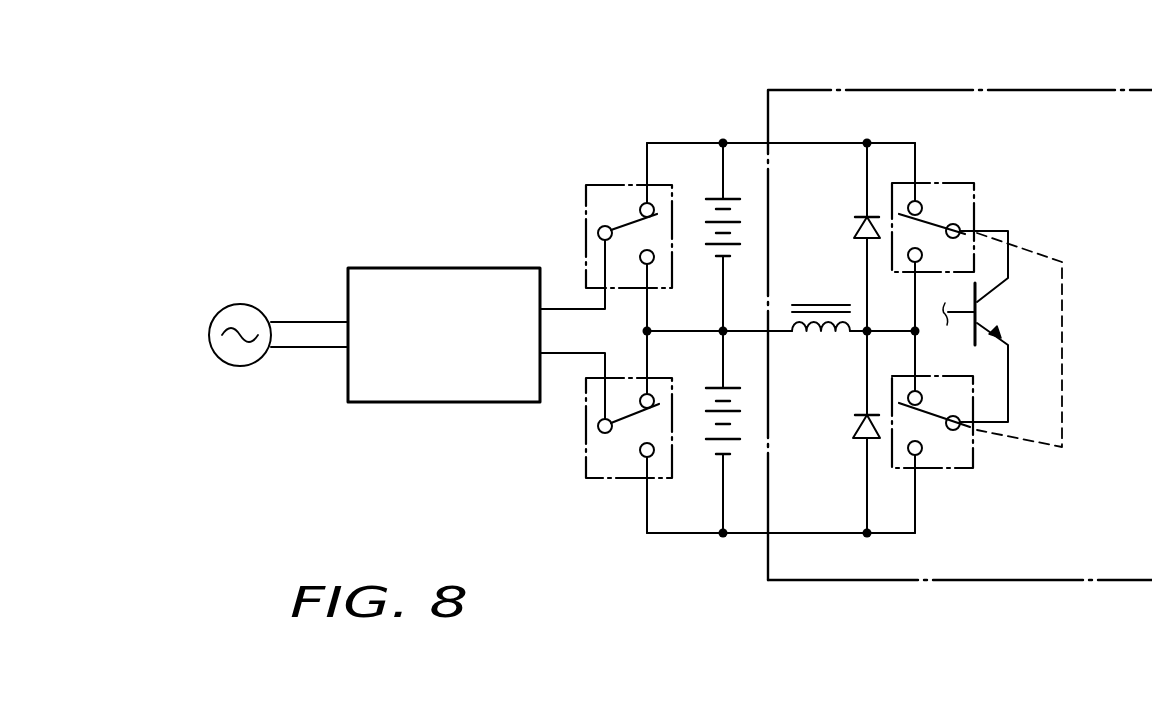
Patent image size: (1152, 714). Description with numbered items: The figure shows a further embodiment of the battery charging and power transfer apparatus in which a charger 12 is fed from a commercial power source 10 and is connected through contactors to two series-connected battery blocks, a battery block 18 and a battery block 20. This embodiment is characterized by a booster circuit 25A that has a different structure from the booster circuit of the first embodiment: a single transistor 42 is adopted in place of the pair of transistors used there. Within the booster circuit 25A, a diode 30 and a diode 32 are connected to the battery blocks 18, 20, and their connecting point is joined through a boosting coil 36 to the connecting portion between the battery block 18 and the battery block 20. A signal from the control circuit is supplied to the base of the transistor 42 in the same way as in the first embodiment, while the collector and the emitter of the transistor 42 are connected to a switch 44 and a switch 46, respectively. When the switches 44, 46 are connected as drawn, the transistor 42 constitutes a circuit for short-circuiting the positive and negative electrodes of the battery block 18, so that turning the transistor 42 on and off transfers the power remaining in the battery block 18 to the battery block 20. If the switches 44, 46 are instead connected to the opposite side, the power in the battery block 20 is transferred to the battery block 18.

The commercial power source 10 is at (240, 305).
The charger 12 is at (446, 268).
The battery block 18 is at (750, 222).
The battery block 20 is at (747, 415).
The booster circuit 25A is at (958, 90).
The diode 30 is at (860, 242).
The diode 32 is at (861, 442).
The boosting coil 36 is at (838, 302).
The transistor 42 is at (993, 310).
The switch 44 is at (977, 195).
The switch 46 is at (977, 450).